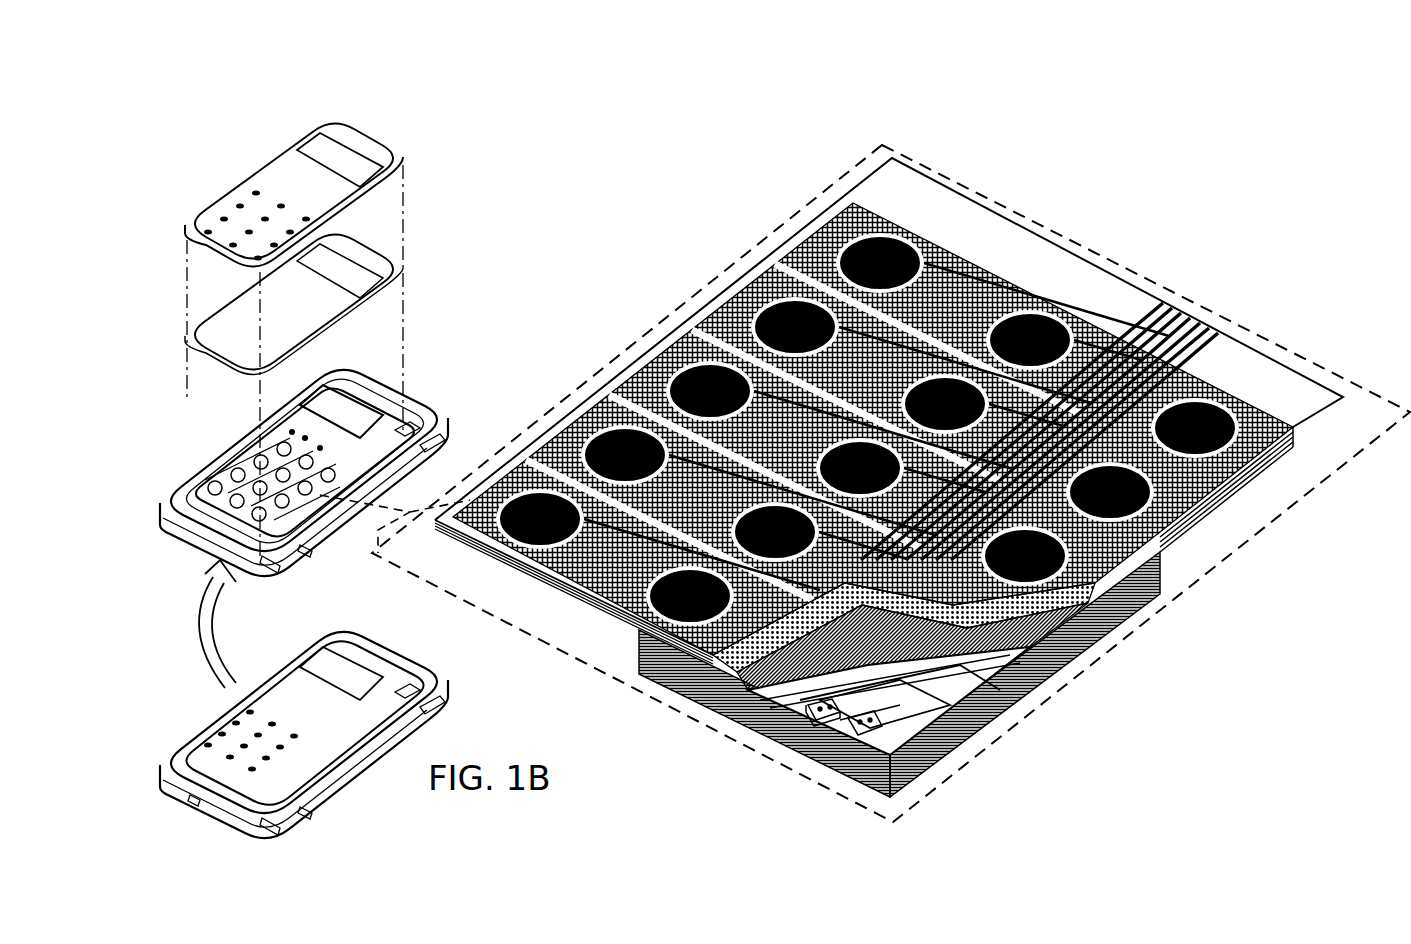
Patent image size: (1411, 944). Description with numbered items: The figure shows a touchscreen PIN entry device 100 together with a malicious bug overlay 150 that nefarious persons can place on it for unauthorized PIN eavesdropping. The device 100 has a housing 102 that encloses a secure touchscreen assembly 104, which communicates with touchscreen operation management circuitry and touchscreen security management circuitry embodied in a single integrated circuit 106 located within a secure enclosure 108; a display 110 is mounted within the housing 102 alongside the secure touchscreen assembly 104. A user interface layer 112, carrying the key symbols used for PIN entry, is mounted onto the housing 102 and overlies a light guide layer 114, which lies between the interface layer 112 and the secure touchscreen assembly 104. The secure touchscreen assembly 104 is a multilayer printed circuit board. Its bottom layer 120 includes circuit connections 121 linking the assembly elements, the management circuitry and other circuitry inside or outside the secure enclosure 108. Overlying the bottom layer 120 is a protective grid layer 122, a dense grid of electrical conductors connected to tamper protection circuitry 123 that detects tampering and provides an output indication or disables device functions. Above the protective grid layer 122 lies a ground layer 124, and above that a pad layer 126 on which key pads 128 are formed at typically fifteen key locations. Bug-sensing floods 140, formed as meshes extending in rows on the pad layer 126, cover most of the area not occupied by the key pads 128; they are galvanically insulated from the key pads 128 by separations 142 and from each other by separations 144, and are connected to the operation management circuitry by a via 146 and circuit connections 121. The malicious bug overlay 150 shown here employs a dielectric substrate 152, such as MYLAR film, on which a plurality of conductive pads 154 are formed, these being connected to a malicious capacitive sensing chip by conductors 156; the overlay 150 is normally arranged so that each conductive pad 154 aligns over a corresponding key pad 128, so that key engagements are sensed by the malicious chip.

The touchscreen PIN entry device 100 is at (350, 798).
The housing 102 is at (178, 497).
The secure touchscreen assembly 104 is at (478, 565).
The integrated circuit 106 is at (815, 702).
The secure enclosure 108 is at (1050, 680).
The display 110 is at (330, 405).
The user interface layer 112 is at (280, 178).
The light guide layer 114 is at (230, 324).
The bottom layer 120 is at (953, 742).
The circuit connections 121 is at (1000, 700).
The protective grid layer 122 is at (713, 688).
The tamper protection circuitry 123 is at (862, 750).
The ground layer 124 is at (1103, 640).
The pad layer 126 is at (660, 630).
The key pads 128 is at (873, 393).
The bug-sensing floods 140 is at (725, 300).
The separations 142 is at (620, 628).
The separations 144 is at (1160, 563).
The via 146 is at (540, 562).
The malicious bug overlay 150 is at (1313, 427).
The dielectric substrate 152 is at (1243, 357).
The conductive pads 154 is at (1035, 290).
The conductors 156 is at (1207, 297).